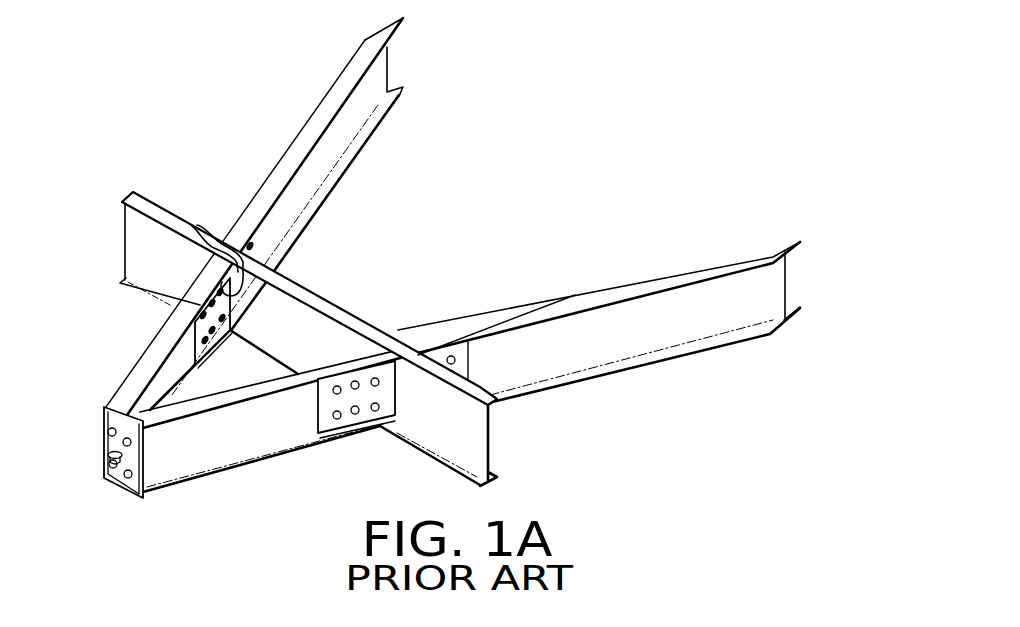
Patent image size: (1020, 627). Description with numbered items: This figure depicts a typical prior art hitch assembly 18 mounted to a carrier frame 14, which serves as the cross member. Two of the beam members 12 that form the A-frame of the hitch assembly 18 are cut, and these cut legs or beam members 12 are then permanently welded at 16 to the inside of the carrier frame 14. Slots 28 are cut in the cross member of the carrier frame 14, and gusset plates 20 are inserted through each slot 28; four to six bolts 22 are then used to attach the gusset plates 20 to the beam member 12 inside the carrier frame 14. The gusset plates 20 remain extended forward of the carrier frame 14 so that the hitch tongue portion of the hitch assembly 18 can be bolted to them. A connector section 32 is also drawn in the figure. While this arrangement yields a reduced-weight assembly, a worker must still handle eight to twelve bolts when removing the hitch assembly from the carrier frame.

The beam member 12 is at (243, 441).
The carrier frame 14 is at (615, 406).
The weld 16 is at (233, 236).
The hitch assembly 18 is at (99, 500).
The gusset plate 20 is at (190, 350).
The bolt 22 is at (244, 306).
The slot 28 is at (192, 226).
The C-channel connector section 32 is at (478, 440).